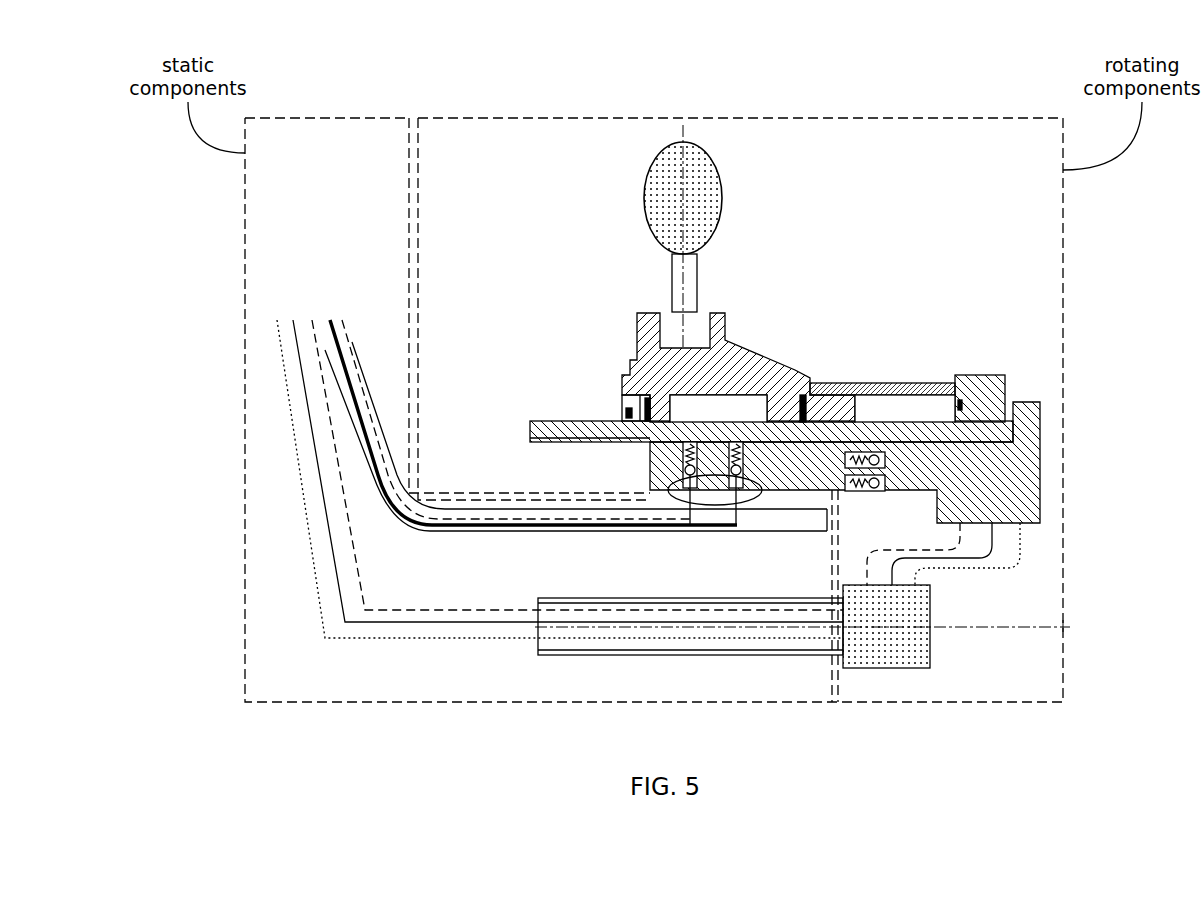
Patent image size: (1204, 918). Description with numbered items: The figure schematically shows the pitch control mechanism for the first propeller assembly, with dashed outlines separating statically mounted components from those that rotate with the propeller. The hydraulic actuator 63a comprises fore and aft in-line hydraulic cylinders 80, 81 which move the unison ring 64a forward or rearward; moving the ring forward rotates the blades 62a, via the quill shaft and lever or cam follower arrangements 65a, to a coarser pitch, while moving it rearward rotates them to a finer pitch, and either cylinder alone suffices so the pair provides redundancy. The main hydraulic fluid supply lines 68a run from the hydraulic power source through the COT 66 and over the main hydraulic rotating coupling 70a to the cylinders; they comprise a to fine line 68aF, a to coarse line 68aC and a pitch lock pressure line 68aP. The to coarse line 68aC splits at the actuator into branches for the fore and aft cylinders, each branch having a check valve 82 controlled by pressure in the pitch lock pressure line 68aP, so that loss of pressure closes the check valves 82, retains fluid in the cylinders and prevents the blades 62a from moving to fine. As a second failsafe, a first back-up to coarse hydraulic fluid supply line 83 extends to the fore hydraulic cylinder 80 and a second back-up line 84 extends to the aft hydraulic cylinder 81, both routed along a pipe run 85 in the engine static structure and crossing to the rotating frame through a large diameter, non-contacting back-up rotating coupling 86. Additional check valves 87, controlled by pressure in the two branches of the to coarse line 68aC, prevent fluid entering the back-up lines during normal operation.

The blades 62a is at (656, 160).
The quill shaft and lever or cam follower arrangements 65a is at (693, 311).
The unison ring 64a is at (745, 357).
The hydraulic actuator 63a is at (850, 368).
The additional check valves 87 is at (642, 414).
The fore hydraulic cylinder 80 is at (727, 419).
The aft hydraulic cylinder 81 is at (914, 419).
The check valves 82 is at (882, 482).
The back-up rotating coupling 86 is at (716, 513).
The first back-up to-coarse hydraulic fluid supply line 83 is at (358, 380).
The second back-up to-coarse hydraulic fluid supply line 84 is at (367, 442).
The pipe run 85 is at (377, 508).
The main hydraulic fluid supply lines 68a is at (560, 549).
The to coarse line 68aC is at (450, 610).
The pitch lock pressure line 68aP is at (475, 622).
The to fine line 68aF is at (510, 638).
The COT 66 is at (753, 655).
The main hydraulic rotating coupling 70a is at (897, 663).